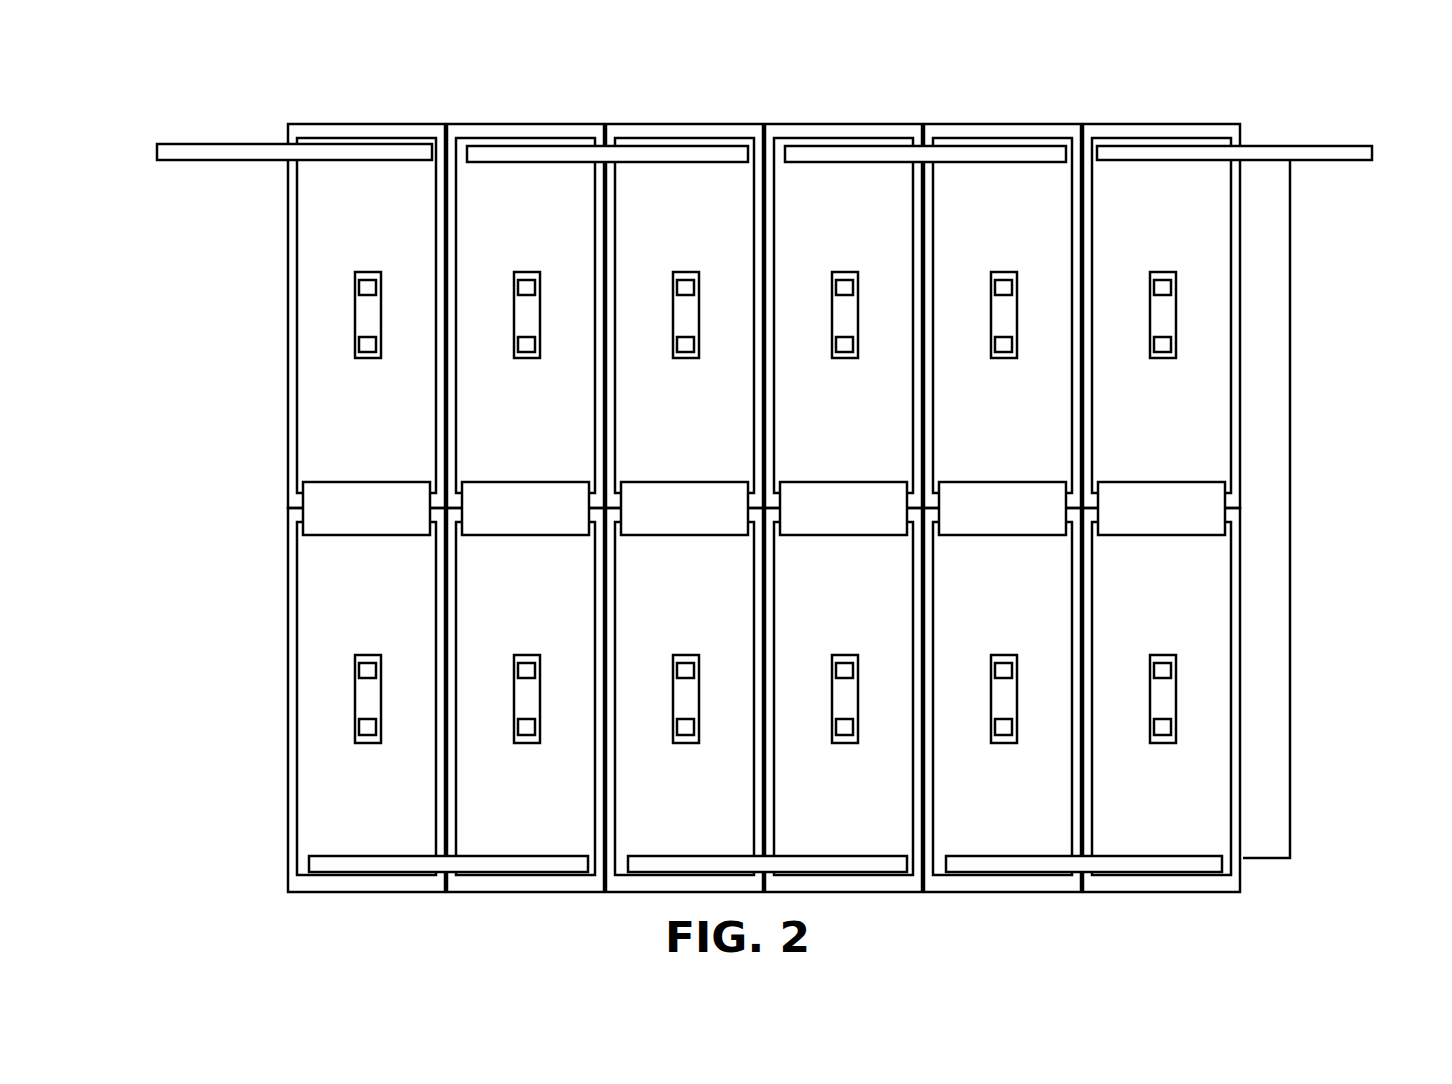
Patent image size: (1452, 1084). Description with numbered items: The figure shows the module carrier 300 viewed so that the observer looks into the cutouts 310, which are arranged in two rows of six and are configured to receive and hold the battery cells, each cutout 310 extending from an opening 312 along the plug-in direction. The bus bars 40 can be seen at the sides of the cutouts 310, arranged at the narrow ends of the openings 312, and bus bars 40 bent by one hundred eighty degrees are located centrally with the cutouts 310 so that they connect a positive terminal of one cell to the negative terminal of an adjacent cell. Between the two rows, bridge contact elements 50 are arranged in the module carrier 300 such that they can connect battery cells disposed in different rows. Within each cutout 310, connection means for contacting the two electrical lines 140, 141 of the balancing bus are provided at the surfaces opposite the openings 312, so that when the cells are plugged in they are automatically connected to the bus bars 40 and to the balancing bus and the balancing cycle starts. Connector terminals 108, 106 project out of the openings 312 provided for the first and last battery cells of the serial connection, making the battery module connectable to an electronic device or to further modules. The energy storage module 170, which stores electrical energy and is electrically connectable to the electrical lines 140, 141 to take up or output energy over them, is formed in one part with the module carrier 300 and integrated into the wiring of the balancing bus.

The module carrier 300 is at (826, 77).
The cutout 310 is at (337, 142).
The opening 312 is at (338, 190).
The connector terminal 108 is at (178, 150).
The connector terminal 106 is at (1320, 152).
The bus bar 40 is at (693, 150).
The bridge contact element 50 is at (362, 480).
The electrical line 140 is at (365, 290).
The electrical line 141 is at (365, 347).
The energy storage module 170 is at (1282, 337).